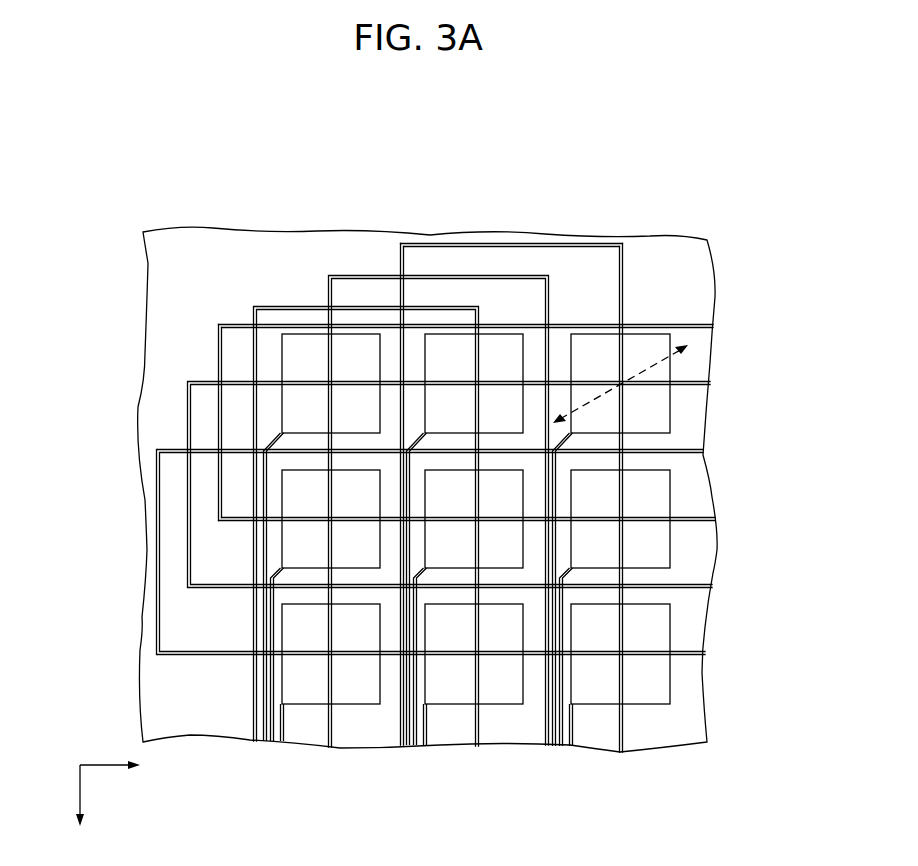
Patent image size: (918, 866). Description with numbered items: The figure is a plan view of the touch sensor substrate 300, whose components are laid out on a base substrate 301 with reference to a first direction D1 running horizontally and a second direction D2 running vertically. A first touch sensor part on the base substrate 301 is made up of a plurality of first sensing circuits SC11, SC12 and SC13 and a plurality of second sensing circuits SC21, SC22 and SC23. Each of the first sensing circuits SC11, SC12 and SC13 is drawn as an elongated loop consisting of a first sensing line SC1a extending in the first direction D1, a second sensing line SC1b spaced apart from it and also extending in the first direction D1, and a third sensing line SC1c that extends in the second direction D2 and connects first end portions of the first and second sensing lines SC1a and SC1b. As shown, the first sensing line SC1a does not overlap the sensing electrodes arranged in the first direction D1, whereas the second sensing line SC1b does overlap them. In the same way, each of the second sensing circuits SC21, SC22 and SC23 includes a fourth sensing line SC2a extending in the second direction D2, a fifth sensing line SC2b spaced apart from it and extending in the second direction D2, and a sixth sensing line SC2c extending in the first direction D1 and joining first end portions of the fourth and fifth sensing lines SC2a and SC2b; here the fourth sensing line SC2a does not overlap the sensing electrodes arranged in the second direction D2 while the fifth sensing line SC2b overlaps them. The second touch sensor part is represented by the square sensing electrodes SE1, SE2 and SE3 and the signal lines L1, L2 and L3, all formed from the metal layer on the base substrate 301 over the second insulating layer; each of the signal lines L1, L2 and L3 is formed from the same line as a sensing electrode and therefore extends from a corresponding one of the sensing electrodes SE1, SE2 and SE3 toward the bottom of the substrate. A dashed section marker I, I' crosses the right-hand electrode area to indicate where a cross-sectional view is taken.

The touch sensor substrate 300 is at (623, 148).
The base substrate 301 is at (202, 265).
The first sensing circuit SC11 is at (70, 345).
The first sensing circuit SC12 is at (188, 562).
The first sensing circuit SC13 is at (156, 617).
The first sensing line SC1a is at (238, 380).
The second sensing line SC1b is at (238, 513).
The third sensing line SC1c is at (188, 413).
The second sensing circuit SC21 is at (311, 305).
The second sensing circuit SC22 is at (372, 276).
The second sensing circuit SC23 is at (632, 190).
The fourth sensing line SC2a is at (404, 262).
The fifth sensing line SC2b is at (620, 262).
The sixth sensing line SC2c is at (500, 244).
The sensing electrode SE1 is at (288, 343).
The sensing electrode SE2 is at (513, 347).
The sensing electrode SE3 is at (655, 343).
The signal line L1 is at (257, 728).
The signal line L2 is at (404, 728).
The signal line L3 is at (553, 728).
The section line I is at (619, 384).
The section line I' is at (695, 350).
The first direction D1 is at (126, 766).
The second direction D2 is at (82, 808).